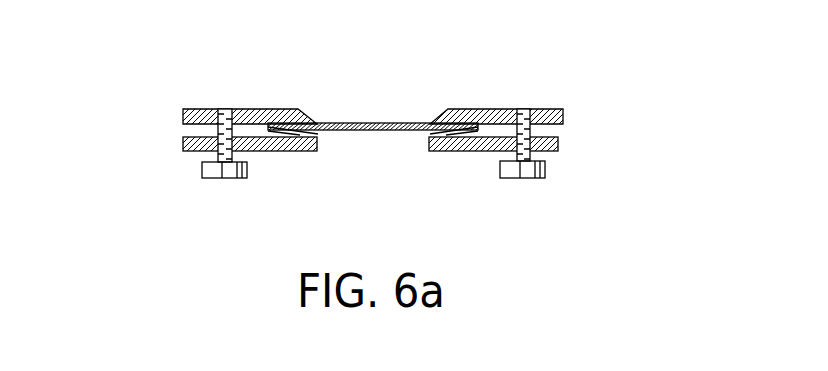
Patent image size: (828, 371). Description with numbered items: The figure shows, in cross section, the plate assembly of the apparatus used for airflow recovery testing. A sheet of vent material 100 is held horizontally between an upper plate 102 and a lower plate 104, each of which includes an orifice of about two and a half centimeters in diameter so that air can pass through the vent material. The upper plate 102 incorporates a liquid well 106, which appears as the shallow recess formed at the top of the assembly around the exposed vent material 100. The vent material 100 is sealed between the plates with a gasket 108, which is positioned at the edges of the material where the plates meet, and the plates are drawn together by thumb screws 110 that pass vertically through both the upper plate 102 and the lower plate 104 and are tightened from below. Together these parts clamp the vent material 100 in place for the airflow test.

The vent material 100 is at (363, 123).
The upper plate 102 is at (182, 117).
The lower plate 104 is at (178, 158).
The liquid well 106 is at (427, 105).
The gasket 108 is at (318, 134).
The thumb screws 110 is at (562, 161).